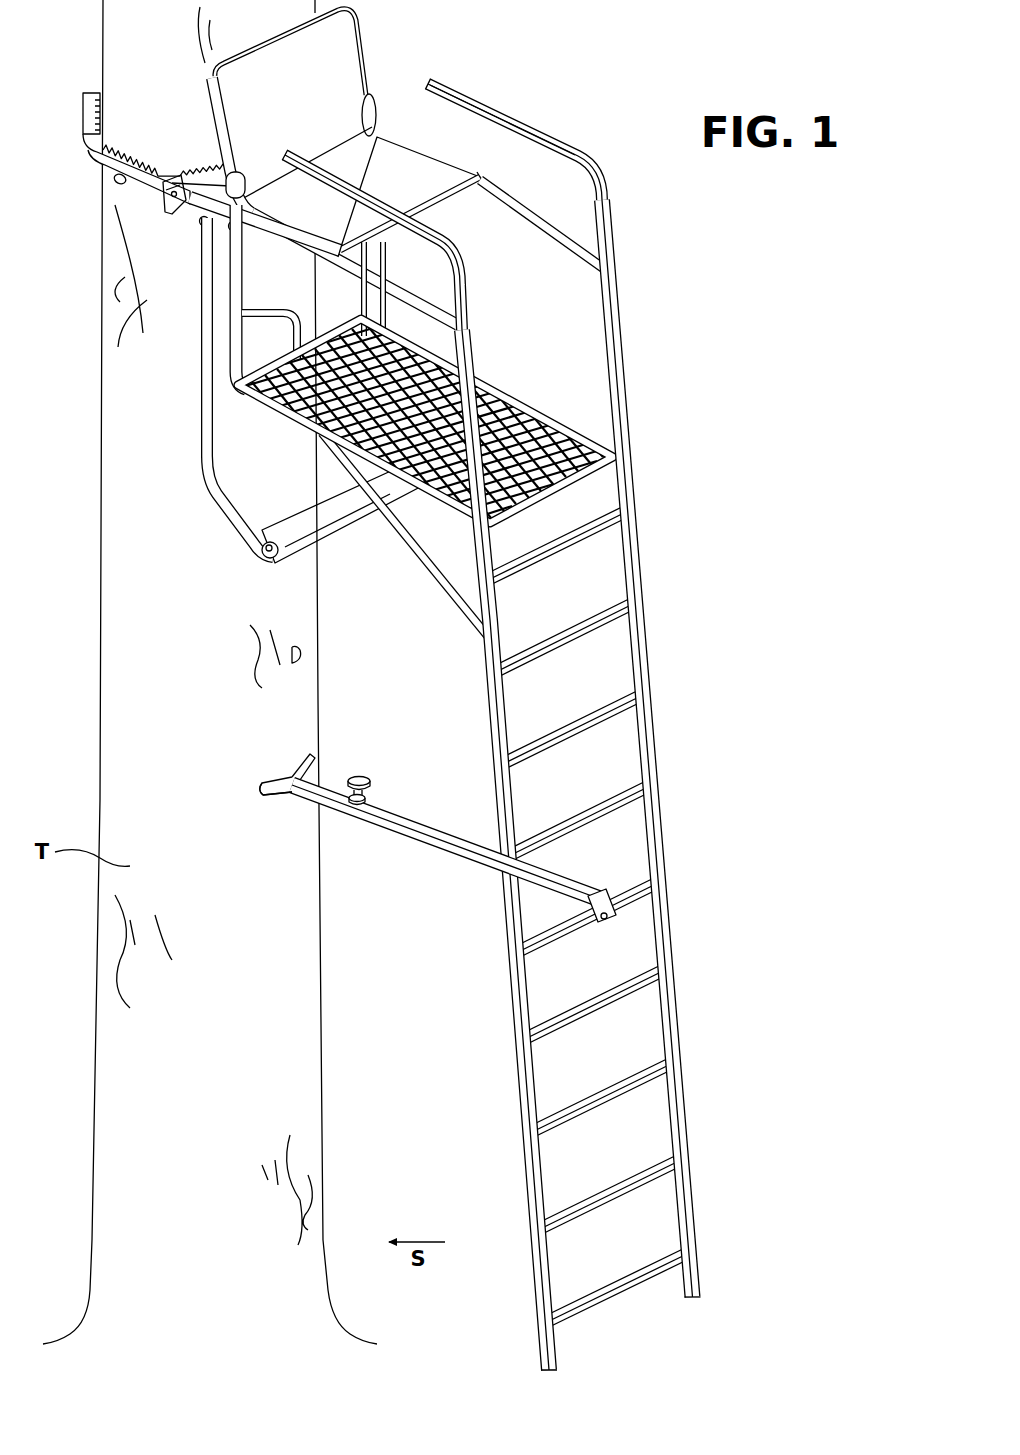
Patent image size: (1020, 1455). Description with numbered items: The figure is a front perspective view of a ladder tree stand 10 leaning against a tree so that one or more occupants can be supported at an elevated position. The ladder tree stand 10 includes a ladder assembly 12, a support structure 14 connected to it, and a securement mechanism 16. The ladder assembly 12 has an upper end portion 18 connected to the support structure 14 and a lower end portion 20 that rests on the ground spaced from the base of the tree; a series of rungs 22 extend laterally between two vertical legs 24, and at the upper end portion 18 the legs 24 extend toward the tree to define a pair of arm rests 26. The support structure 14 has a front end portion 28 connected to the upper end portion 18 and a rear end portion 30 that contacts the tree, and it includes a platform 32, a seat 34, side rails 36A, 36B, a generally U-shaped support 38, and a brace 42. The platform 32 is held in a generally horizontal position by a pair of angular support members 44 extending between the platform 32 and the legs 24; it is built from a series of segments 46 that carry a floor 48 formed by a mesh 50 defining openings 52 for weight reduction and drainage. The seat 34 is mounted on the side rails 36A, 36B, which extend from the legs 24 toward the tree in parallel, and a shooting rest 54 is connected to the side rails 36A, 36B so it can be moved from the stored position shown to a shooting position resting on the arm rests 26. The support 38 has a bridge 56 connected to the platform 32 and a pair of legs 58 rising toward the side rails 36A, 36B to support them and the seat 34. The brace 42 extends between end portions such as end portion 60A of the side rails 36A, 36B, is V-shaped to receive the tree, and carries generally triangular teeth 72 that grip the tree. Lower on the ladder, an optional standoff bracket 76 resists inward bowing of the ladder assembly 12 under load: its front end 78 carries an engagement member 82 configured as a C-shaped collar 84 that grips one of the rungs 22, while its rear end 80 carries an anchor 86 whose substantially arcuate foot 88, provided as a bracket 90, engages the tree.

The ladder tree stand 10 is at (598, 73).
The ladder assembly 12 is at (673, 742).
The support structure 14 is at (525, 306).
The securement mechanism 16 is at (172, 231).
The upper end portion 18 is at (654, 112).
The lower end portion 20 is at (712, 1278).
The rungs 22 is at (620, 698).
The legs 24 is at (648, 615).
The arm rests 26 is at (493, 107).
The front end portion 28 is at (499, 421).
The rear end portion 30 is at (180, 167).
The platform 32 is at (549, 400).
The seat 34 is at (373, 67).
The side rail 36A is at (430, 313).
The side rail 36B is at (572, 238).
The U-shaped support 38 is at (216, 333).
The brace 42 is at (209, 150).
The angular support members 44 is at (496, 614).
The segments 46 is at (257, 551).
The floor 48 is at (500, 382).
The mesh 50 is at (340, 423).
The openings 52 is at (320, 447).
The shooting rest 54 is at (197, 428).
The bridge 56 is at (233, 313).
The legs 58 is at (233, 283).
The end portion 60A is at (170, 205).
The teeth 72 is at (200, 157).
The standoff bracket 76 is at (415, 855).
The front end 78 is at (593, 933).
The rear end 80 is at (339, 765).
The engagement member 82 is at (610, 885).
The C-shaped collar 84 is at (604, 916).
The anchor 86 is at (271, 771).
The foot 88 is at (265, 804).
The bracket 90 is at (288, 795).